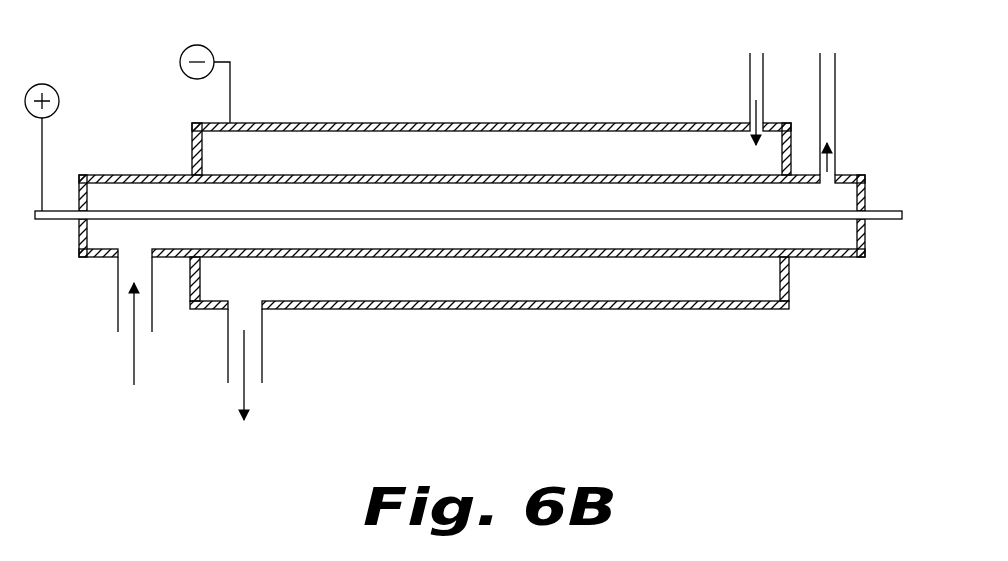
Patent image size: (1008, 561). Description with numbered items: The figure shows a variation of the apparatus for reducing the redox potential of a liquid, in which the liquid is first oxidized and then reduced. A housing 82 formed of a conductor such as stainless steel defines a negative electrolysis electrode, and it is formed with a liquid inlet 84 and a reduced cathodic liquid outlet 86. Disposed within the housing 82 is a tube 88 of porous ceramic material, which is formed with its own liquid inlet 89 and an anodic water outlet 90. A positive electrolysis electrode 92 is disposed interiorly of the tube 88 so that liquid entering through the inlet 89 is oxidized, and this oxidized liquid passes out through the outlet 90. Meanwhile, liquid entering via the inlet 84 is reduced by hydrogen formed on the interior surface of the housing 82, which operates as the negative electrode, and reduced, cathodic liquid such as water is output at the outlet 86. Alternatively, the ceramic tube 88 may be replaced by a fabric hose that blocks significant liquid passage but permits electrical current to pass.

The housing 82 is at (590, 123).
The liquid inlet 84 is at (750, 87).
The reduced cathodic liquid outlet 86 is at (262, 340).
The tube 88 is at (535, 178).
The liquid inlet 89 is at (118, 283).
The anodic water outlet 90 is at (835, 100).
The positive electrolysis electrode 92 is at (525, 219).